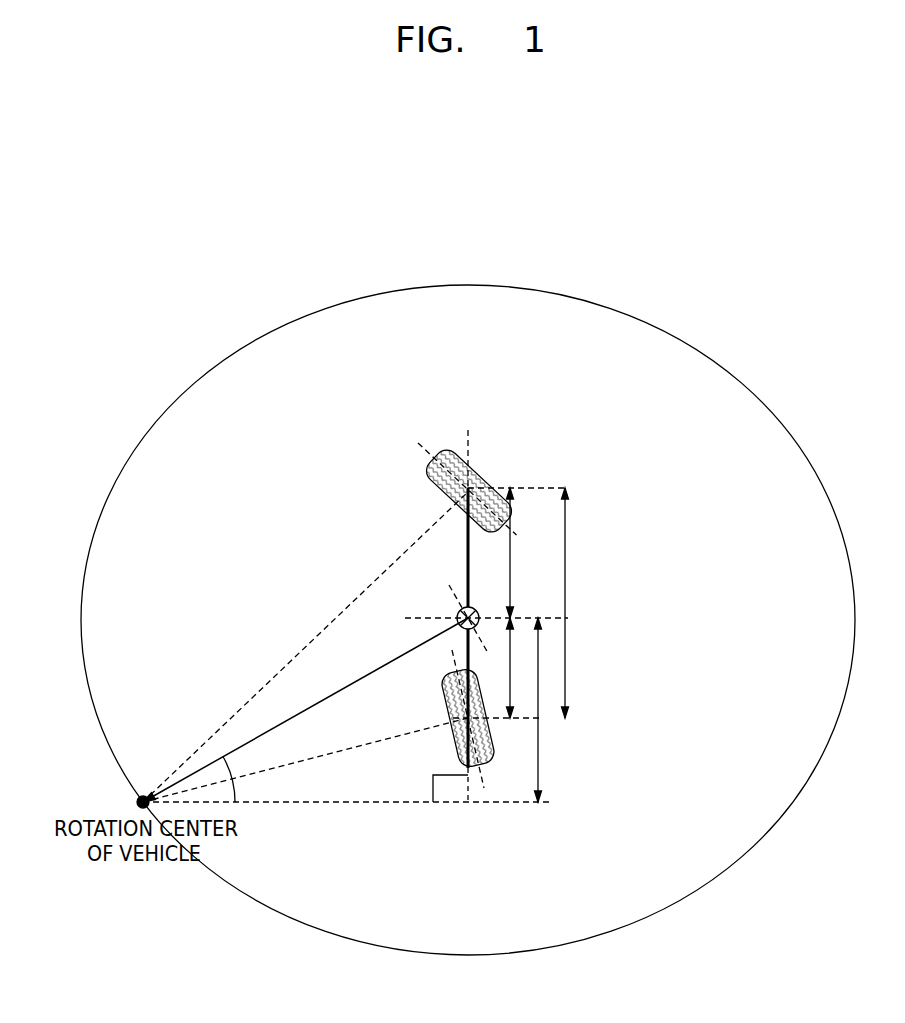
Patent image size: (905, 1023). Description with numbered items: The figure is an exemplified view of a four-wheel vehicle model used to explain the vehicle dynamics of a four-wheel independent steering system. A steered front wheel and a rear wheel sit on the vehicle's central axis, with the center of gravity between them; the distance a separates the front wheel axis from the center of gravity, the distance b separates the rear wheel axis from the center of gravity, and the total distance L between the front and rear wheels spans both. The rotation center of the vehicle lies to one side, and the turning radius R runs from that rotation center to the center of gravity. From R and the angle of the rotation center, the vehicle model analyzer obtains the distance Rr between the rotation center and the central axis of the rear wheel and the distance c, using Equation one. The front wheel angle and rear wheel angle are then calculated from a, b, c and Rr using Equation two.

The turning radius R is at (305, 710).
The distance between central axis of rear wheel and rotation center Rr is at (346, 820).
The distance between front wheel axis and center of gravity a is at (520, 553).
The distance between rear wheel axis and center of gravity b is at (521, 668).
The lateral distance of the rotation center c is at (546, 710).
The total distance between front and rear wheels L is at (574, 603).